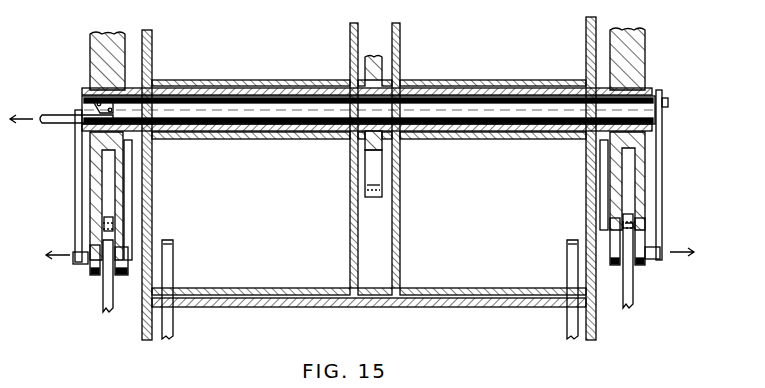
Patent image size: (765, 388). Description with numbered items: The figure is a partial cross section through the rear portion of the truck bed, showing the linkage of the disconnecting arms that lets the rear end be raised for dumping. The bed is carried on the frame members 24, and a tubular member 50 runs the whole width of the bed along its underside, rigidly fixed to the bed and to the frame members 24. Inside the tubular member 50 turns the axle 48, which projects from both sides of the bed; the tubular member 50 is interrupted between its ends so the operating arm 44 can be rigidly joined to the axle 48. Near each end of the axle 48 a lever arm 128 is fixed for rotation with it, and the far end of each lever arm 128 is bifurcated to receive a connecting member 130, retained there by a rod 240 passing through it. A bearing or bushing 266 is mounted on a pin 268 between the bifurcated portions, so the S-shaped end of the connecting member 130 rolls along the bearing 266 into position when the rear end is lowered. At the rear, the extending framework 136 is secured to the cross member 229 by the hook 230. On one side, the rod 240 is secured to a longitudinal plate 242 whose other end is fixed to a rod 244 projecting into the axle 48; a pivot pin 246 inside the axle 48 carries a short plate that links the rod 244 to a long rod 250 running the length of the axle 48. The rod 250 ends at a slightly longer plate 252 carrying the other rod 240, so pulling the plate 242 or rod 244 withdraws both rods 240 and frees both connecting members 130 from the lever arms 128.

The frame members 24 is at (152, 175).
The operating arm 44 is at (370, 197).
The axle 48 is at (292, 84).
The tubular member 50 is at (246, 88).
The lever arms 128 is at (97, 54).
The connecting members 130 is at (104, 288).
The extending framework 136 is at (236, 307).
The cross member 229 is at (220, 290).
The hook 230 is at (168, 262).
The rod 240 is at (82, 264).
The plate 242 is at (75, 172).
The rod 244 is at (64, 123).
The pivot pin 246 is at (97, 106).
The rod 250 is at (204, 105).
The plate 252 is at (662, 150).
The bearing or bushing 266 is at (108, 217).
The pin 268 is at (92, 228).